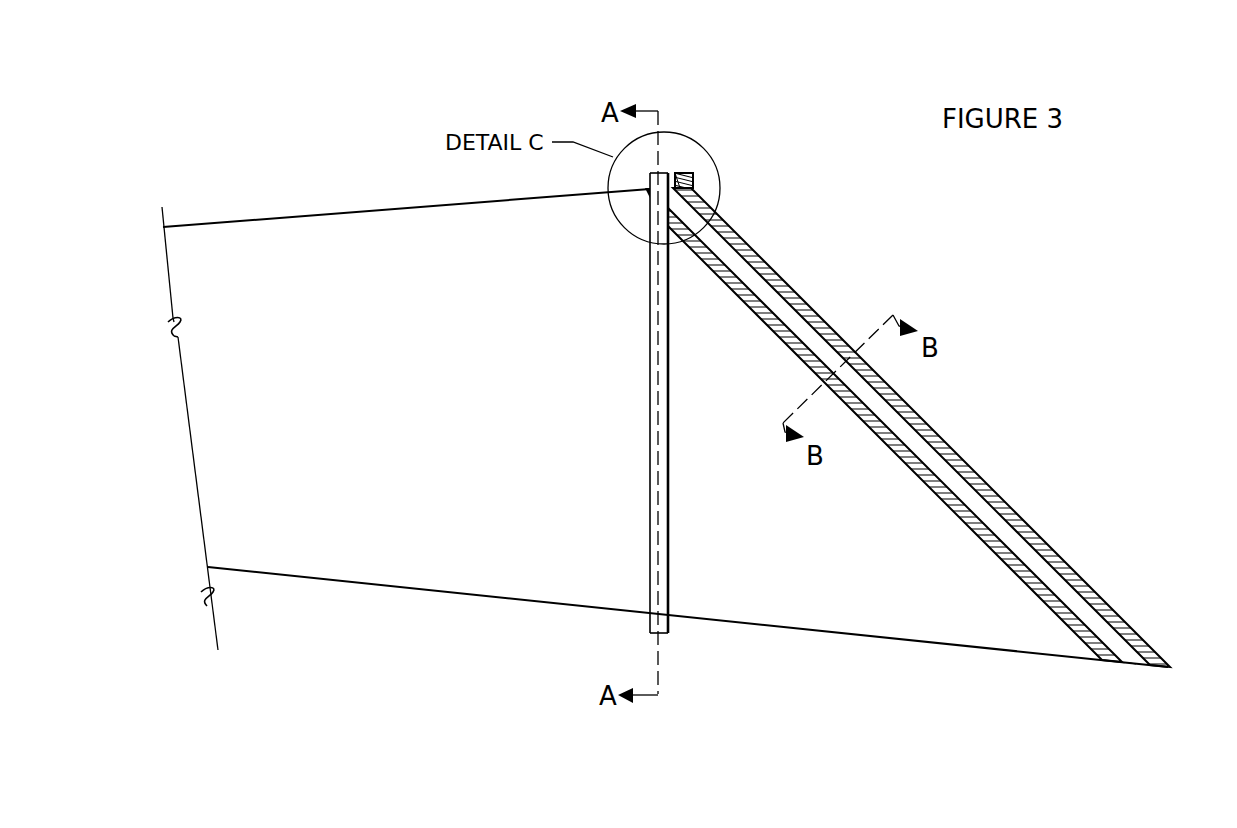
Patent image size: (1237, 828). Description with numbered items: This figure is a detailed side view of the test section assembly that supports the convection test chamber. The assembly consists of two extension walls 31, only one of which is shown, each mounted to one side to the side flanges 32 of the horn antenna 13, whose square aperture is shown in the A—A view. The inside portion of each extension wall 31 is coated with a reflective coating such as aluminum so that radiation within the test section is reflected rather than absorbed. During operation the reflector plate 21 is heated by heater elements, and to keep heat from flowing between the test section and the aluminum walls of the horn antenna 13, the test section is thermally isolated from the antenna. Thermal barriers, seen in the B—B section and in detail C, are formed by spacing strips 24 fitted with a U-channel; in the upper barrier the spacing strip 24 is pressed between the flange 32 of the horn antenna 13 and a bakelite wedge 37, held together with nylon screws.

The horn antenna 13 is at (406, 175).
The reflector plate 21 is at (920, 427).
The spacing strip 24 is at (946, 390).
The extension wall 31 is at (688, 640).
The side flange 32 is at (725, 444).
The bakelite wedge 37 is at (743, 158).